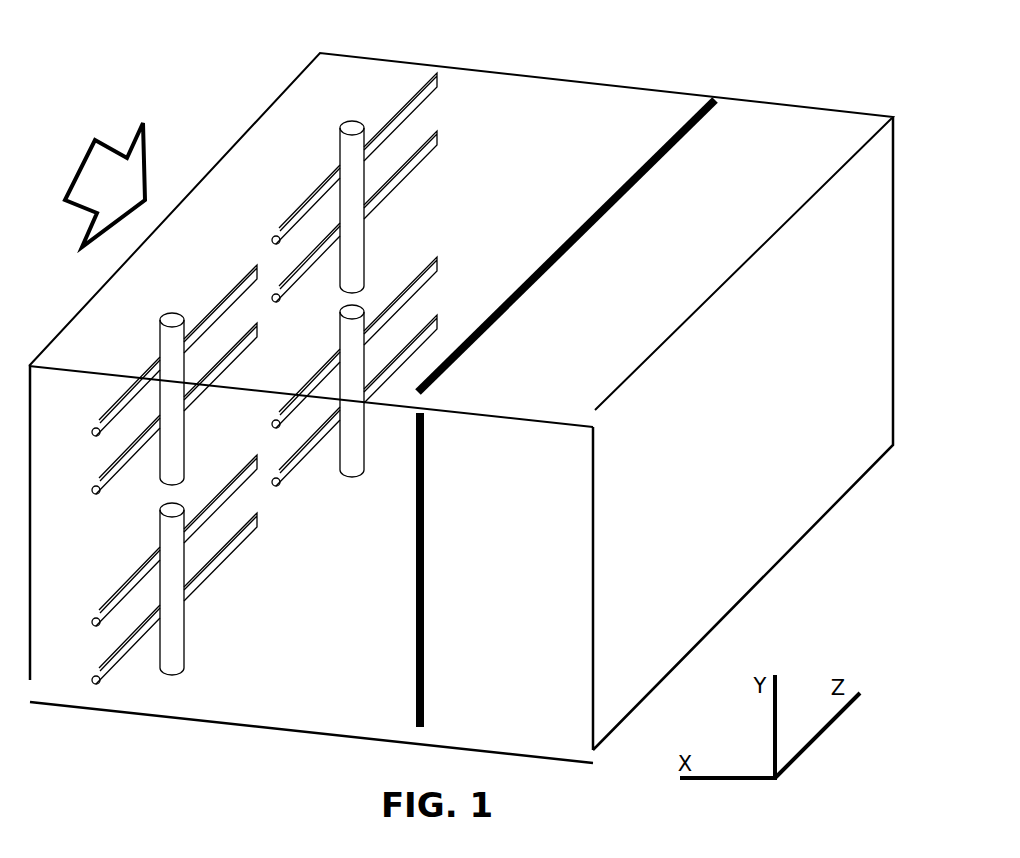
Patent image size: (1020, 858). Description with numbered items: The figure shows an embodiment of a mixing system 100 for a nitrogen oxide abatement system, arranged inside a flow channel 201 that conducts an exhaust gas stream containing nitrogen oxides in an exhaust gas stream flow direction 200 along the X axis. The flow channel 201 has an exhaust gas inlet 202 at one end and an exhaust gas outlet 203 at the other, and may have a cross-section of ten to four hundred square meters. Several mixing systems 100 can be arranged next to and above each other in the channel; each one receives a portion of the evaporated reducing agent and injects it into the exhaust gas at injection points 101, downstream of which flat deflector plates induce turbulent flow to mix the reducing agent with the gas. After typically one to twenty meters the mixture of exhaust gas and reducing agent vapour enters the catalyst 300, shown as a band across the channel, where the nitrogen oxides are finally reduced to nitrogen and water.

The mixing system 100 is at (351, 128).
The injection point 101 is at (95, 623).
The exhaust gas stream flow direction 200 is at (105, 185).
The flow channel 201 is at (487, 151).
The exhaust gas inlet 202 is at (222, 173).
The exhaust gas outlet 203 is at (733, 287).
The catalyst 300 is at (642, 180).